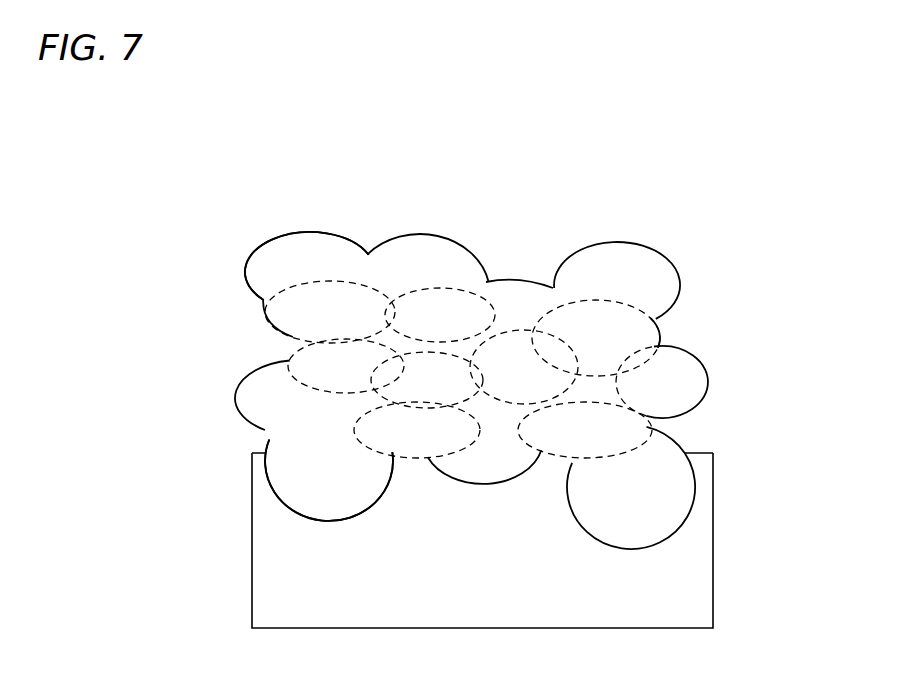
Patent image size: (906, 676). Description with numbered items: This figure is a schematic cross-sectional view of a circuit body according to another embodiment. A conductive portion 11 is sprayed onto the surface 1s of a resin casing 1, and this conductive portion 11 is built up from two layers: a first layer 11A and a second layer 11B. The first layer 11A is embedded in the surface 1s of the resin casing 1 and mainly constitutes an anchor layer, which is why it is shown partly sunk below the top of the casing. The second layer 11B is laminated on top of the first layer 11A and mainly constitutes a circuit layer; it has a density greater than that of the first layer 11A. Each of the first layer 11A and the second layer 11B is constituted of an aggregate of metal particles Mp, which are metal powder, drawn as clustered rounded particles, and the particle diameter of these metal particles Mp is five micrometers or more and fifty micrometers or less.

The resin casing 1 is at (692, 599).
The surface of the resin casing 1s is at (262, 452).
The conductive portion 11 is at (509, 358).
The first layer 11A is at (725, 393).
The second layer 11B is at (725, 240).
The metal particles Mp is at (267, 263).